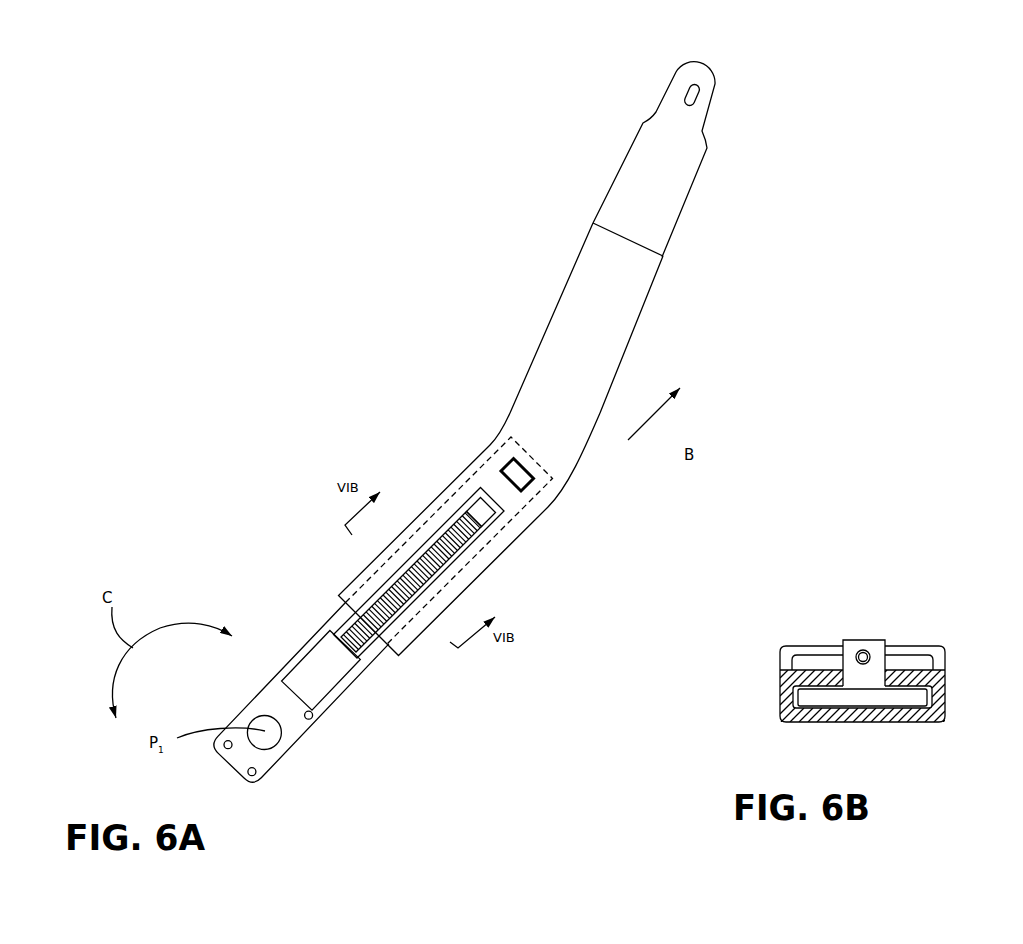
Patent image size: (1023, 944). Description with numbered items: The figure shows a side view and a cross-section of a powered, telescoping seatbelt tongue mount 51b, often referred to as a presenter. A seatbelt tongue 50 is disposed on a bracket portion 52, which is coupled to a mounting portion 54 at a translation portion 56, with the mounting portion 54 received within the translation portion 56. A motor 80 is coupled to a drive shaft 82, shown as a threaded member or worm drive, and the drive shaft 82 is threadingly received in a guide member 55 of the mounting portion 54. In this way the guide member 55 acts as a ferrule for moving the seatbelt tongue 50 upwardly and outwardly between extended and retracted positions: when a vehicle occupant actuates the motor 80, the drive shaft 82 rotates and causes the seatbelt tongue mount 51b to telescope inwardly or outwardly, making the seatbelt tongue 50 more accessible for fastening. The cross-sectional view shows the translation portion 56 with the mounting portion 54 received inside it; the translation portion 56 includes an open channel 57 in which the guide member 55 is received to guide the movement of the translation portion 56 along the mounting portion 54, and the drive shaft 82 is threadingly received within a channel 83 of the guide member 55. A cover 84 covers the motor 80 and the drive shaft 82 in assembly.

In FIG. 6A, the seatbelt tongue 50 is at (680, 182).
In FIG. 6A, the seatbelt tongue mount 51b is at (462, 422).
In FIG. 6A, the bracket portion 52 is at (635, 285).
In FIG. 6A, the mounting portion 54 is at (267, 697).
In FIG. 6B, the mounting portion 54 is at (900, 700).
In FIG. 6B, the guide member 55 is at (843, 672).
In FIG. 6A, the translation portion 56 is at (548, 507).
In FIG. 6B, the translation portion 56 is at (945, 690).
In FIG. 6B, the open channel 57 is at (883, 667).
In FIG. 6A, the motor 80 is at (315, 670).
In FIG. 6A, the drive shaft 82 is at (342, 636).
In FIG. 6B, the drive shaft 82 is at (872, 655).
In FIG. 6B, the channel 83 is at (857, 649).
In FIG. 6B, the cover 84 is at (803, 646).